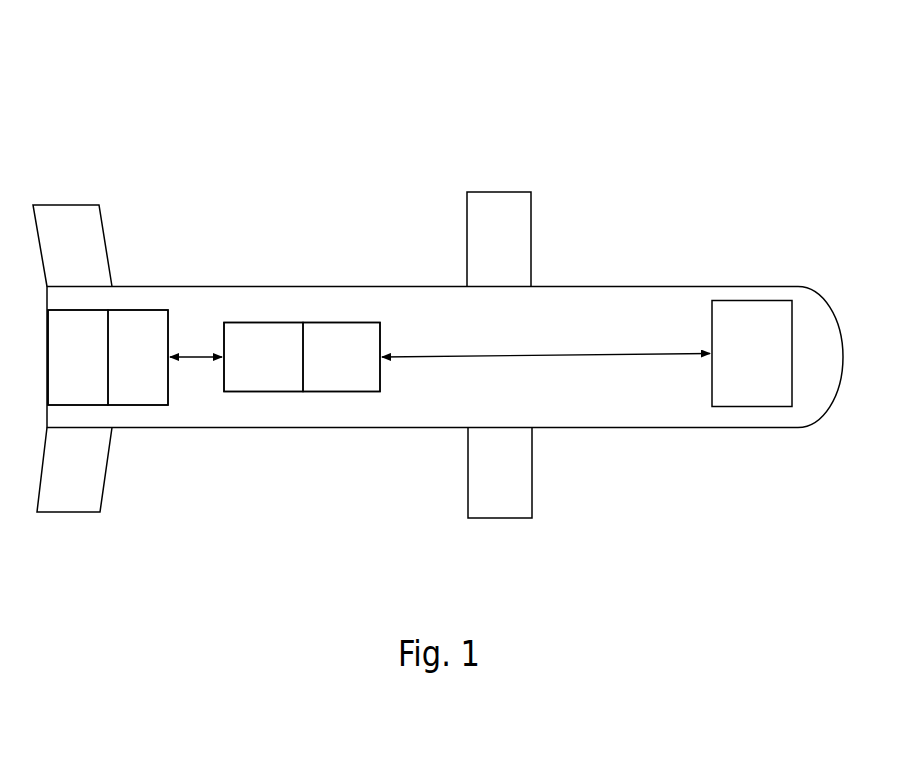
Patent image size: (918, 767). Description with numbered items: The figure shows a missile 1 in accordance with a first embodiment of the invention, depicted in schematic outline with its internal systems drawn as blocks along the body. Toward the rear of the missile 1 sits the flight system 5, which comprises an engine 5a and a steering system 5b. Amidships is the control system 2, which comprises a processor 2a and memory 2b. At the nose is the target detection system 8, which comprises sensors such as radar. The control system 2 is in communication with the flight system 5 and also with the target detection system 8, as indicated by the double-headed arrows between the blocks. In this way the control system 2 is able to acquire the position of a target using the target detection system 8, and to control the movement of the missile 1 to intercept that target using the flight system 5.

The missile 1 is at (590, 82).
The control system 2 is at (302, 308).
The processor 2a is at (248, 371).
The memory 2b is at (326, 371).
The flight system 5 is at (109, 315).
The engine 5a is at (63, 371).
The steering system 5b is at (123, 371).
The target detection system 8 is at (743, 367).